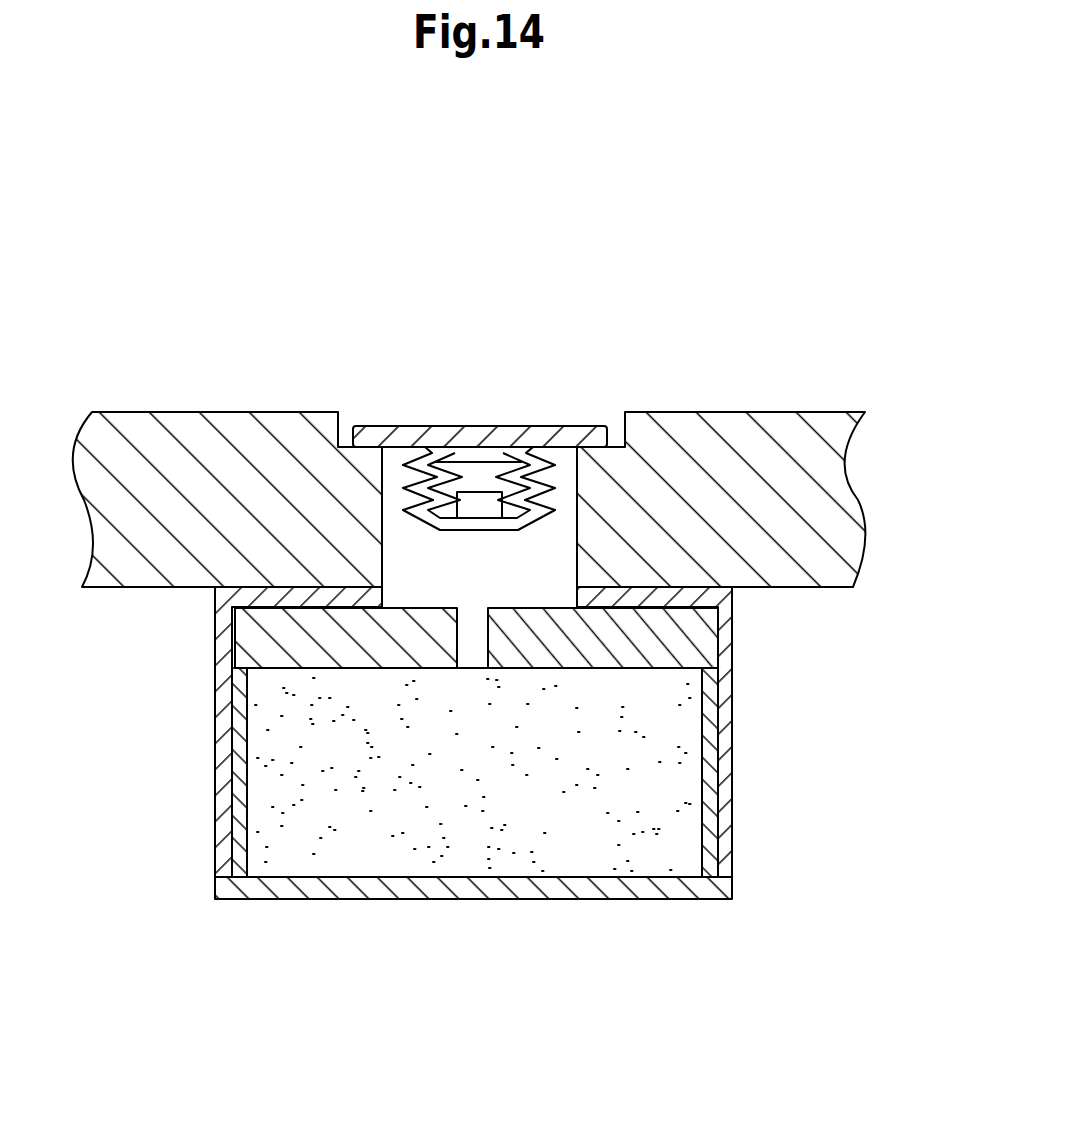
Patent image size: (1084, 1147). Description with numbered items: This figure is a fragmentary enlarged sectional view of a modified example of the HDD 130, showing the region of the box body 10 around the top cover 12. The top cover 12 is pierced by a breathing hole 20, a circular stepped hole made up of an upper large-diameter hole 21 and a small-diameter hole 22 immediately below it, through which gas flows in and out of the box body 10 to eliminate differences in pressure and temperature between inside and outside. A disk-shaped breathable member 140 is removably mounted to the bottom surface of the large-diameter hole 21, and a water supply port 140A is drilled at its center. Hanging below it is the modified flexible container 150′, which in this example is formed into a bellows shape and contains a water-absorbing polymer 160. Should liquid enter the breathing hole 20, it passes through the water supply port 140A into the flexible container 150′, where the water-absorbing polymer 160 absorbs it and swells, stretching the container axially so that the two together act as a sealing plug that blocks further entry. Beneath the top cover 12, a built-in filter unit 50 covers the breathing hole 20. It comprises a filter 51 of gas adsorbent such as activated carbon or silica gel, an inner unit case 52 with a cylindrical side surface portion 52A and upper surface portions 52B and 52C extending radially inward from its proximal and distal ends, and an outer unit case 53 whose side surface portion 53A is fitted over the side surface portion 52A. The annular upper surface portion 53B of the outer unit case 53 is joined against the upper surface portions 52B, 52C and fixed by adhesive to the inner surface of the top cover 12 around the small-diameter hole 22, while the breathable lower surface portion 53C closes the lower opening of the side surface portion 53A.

The box body 10 is at (108, 412).
The top cover 12 is at (188, 423).
The HDD 130 is at (835, 383).
The breathing hole 20 is at (552, 453).
The large-diameter hole 21 is at (626, 447).
The small-diameter hole 22 is at (392, 475).
The breathable member 140 is at (402, 437).
The water supply port 140A is at (490, 447).
The flexible container 150′ is at (428, 458).
The water-absorbing polymer 160 is at (492, 490).
The built-in filter unit 50 is at (506, 655).
The filter 51 is at (262, 682).
The inner unit case 52 is at (534, 603).
The side surface portion 52A is at (712, 706).
The upper surface portion 52B is at (307, 623).
The upper surface portion 52C is at (713, 632).
The outer unit case 53 is at (506, 734).
The side surface portion 53A is at (224, 848).
The annular upper surface portion 53B is at (715, 590).
The lower surface portion 53C is at (615, 893).